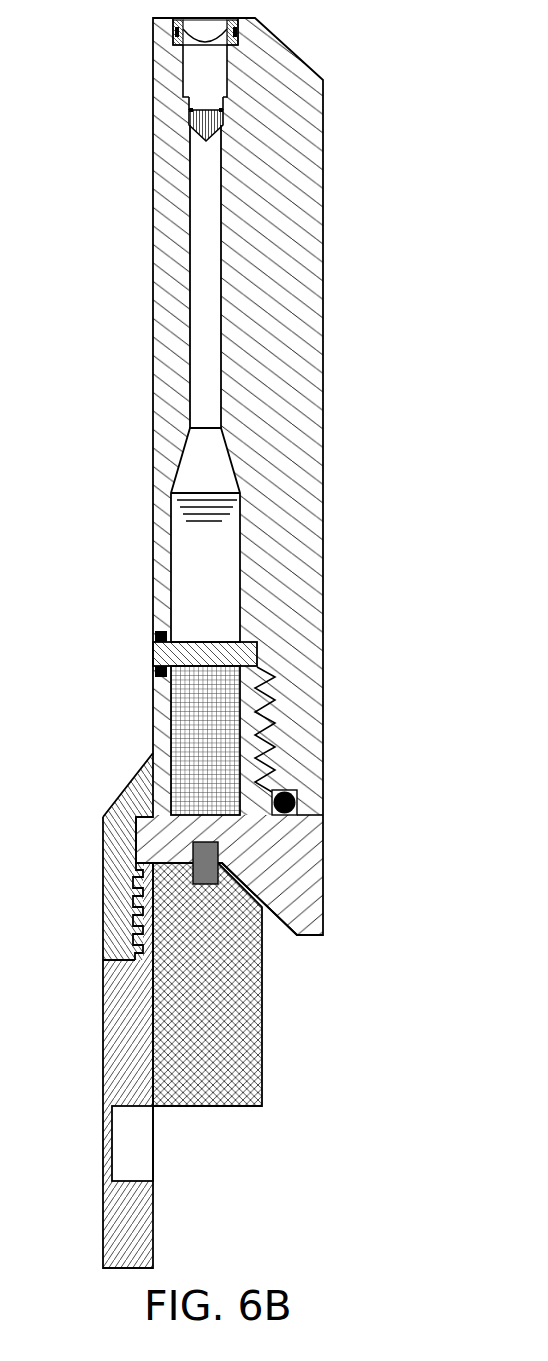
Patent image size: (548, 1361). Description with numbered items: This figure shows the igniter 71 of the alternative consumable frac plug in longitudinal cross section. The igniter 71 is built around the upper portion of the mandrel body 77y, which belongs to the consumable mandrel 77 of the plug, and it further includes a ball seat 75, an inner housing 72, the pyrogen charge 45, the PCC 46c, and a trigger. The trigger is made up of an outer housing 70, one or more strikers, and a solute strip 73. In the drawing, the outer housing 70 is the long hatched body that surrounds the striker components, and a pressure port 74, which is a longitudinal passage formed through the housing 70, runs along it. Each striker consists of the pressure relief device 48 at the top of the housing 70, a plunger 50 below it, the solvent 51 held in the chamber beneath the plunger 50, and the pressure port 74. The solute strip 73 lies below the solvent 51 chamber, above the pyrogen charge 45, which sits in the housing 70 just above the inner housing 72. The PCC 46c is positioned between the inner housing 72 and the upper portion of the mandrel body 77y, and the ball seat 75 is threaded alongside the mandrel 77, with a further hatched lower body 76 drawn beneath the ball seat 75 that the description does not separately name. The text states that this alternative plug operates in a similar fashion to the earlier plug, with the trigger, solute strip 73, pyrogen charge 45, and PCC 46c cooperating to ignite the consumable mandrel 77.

The outer housing 70 is at (323, 303).
The igniter 71 is at (380, 56).
The inner housing 72 is at (323, 850).
The pressure relief device 48 is at (176, 18).
The plunger 50 is at (212, 126).
The pressure port 74 is at (207, 234).
The solvent 51 is at (205, 522).
The solute strip 73 is at (153, 650).
The pyrogen charge 45 is at (196, 741).
The consumable mandrel 77 is at (300, 1178).
The upper portion of the mandrel body 77y is at (221, 1088).
The PCC 46c is at (207, 863).
The ball seat 75 is at (110, 893).
The cap 76 is at (110, 1018).